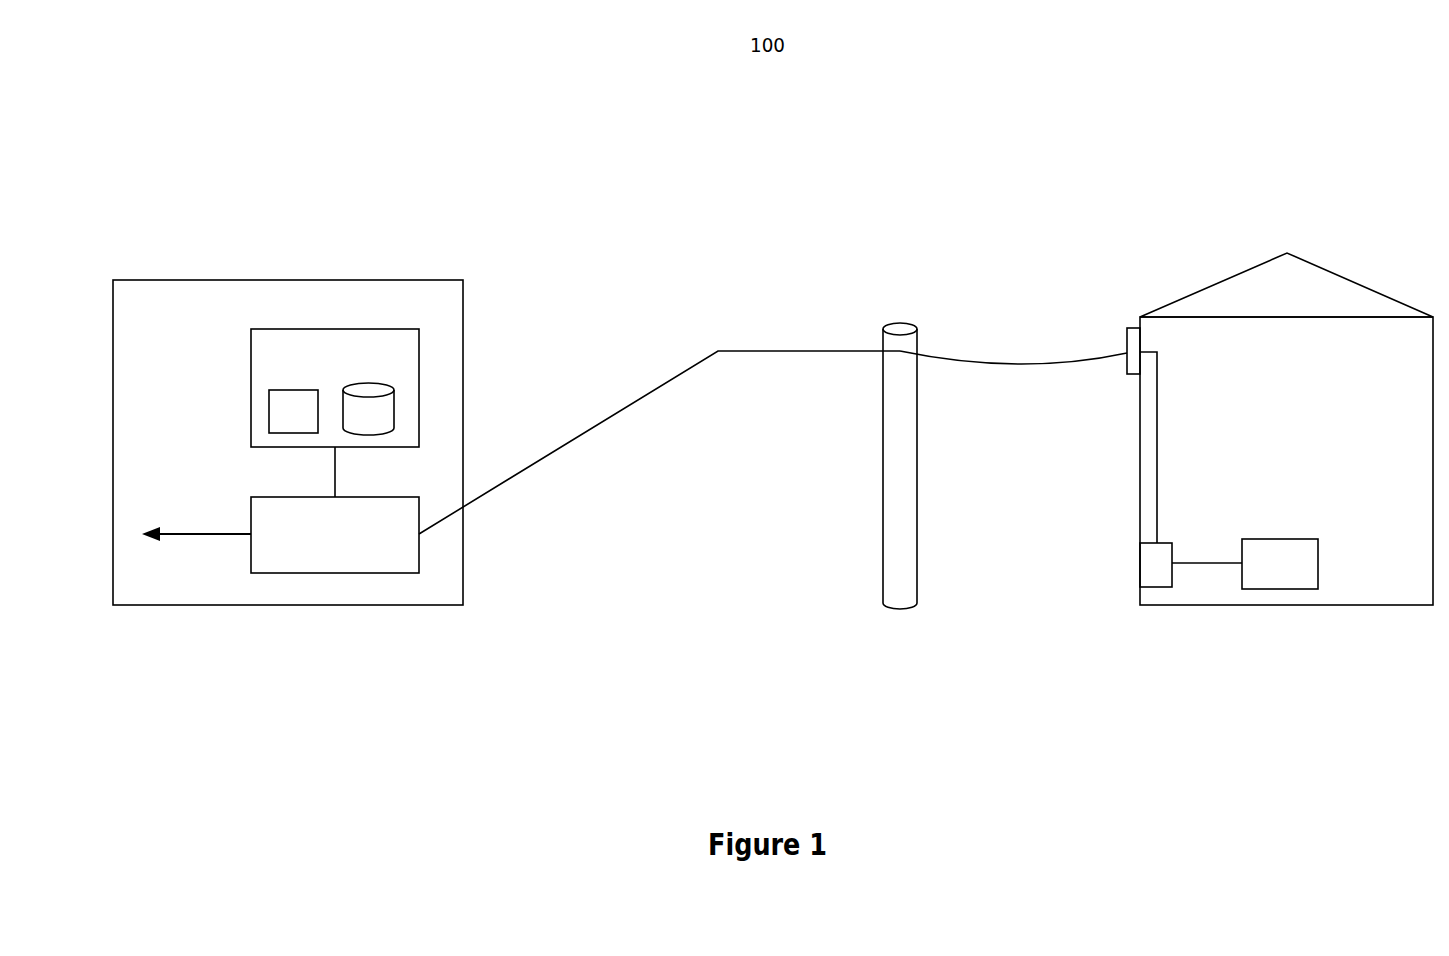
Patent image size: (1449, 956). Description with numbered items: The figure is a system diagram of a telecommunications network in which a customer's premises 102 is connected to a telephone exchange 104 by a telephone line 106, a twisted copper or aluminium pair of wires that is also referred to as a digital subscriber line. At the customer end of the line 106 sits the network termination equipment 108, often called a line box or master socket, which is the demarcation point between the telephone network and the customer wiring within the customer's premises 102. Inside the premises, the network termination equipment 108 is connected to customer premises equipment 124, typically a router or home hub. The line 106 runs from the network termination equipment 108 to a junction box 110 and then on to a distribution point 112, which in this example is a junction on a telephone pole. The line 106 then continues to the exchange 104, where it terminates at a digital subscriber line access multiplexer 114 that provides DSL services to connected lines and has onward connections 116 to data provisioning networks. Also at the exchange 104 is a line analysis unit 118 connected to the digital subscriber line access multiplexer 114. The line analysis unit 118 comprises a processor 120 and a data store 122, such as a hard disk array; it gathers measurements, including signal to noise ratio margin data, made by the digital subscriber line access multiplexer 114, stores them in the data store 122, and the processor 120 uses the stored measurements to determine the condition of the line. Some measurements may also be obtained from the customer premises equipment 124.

The customer's premises 102 is at (1224, 268).
The telephone exchange 104 is at (154, 277).
The telephone line 106 is at (770, 346).
The network termination equipment 108 is at (1133, 558).
The junction box 110 is at (1128, 328).
The distribution point 112 is at (875, 557).
The digital subscriber line access multiplexer 114 is at (385, 491).
The onward connections 116 is at (196, 523).
The line analysis unit 118 is at (340, 322).
The processor 120 is at (285, 386).
The data store 122 is at (360, 384).
The customer premises equipment 124 is at (1260, 534).